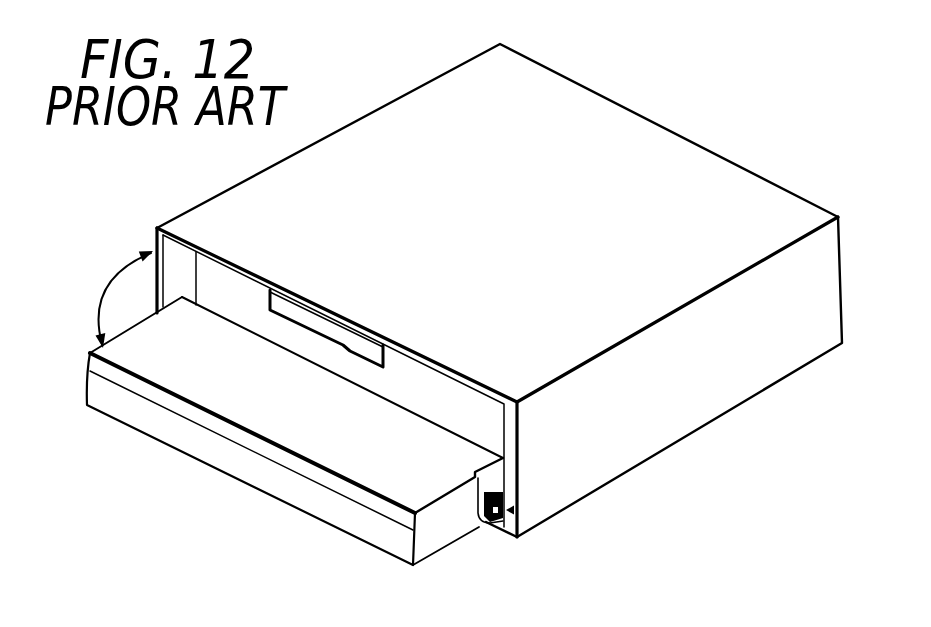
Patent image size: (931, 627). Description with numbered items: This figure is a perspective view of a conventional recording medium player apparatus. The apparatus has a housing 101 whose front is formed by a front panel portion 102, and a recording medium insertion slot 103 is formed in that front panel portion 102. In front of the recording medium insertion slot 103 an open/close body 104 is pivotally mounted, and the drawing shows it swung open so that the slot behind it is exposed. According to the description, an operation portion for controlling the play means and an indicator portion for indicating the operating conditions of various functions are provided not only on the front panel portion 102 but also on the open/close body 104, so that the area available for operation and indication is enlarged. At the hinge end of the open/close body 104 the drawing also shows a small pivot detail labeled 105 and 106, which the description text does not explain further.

The housing 101 is at (648, 135).
The front panel portion 102 is at (432, 385).
The recording medium insertion slot 103 is at (336, 328).
The open/close body 104 is at (263, 472).
The latch member 105 is at (496, 524).
The engaging pin 106 is at (513, 510).